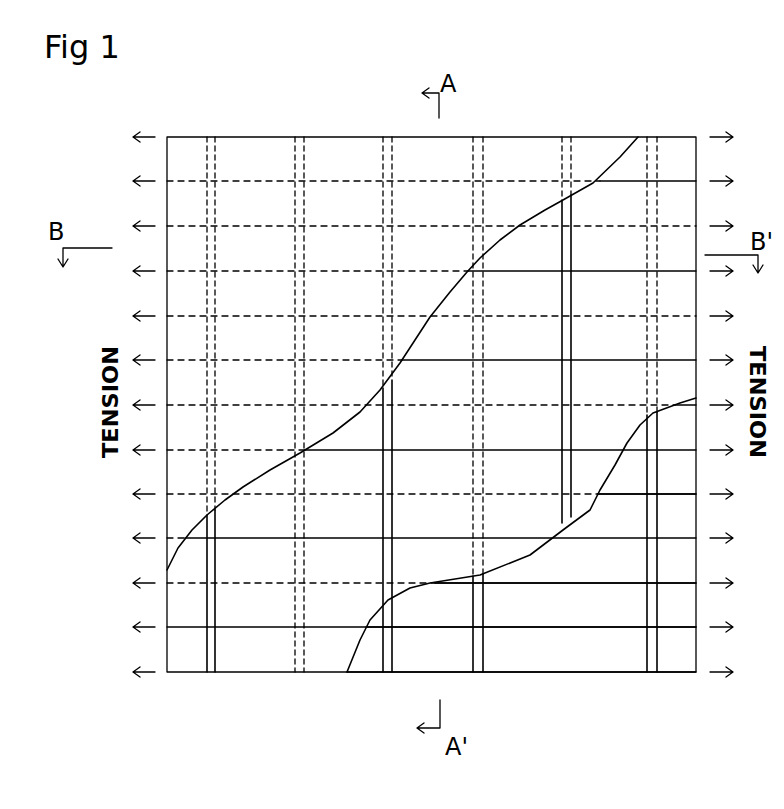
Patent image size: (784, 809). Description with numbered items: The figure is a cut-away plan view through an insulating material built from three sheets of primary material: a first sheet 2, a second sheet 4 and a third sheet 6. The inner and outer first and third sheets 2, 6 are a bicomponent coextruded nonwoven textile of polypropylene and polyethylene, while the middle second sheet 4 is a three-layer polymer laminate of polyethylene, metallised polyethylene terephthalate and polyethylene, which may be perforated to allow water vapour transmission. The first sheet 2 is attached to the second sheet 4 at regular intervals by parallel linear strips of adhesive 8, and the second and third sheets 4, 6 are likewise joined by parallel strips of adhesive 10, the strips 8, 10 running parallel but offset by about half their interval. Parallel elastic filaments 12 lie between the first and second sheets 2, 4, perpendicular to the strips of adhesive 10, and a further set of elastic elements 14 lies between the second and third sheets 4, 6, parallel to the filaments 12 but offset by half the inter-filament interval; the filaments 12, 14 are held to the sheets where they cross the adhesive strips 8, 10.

The first sheet 2 is at (262, 145).
The second sheet 4 is at (673, 150).
The third sheet 6 is at (672, 657).
The strips of adhesive 8 is at (563, 213).
The strips of adhesive 10 is at (483, 663).
The elastic filaments 12 is at (627, 178).
The elastic elements 14 is at (627, 495).